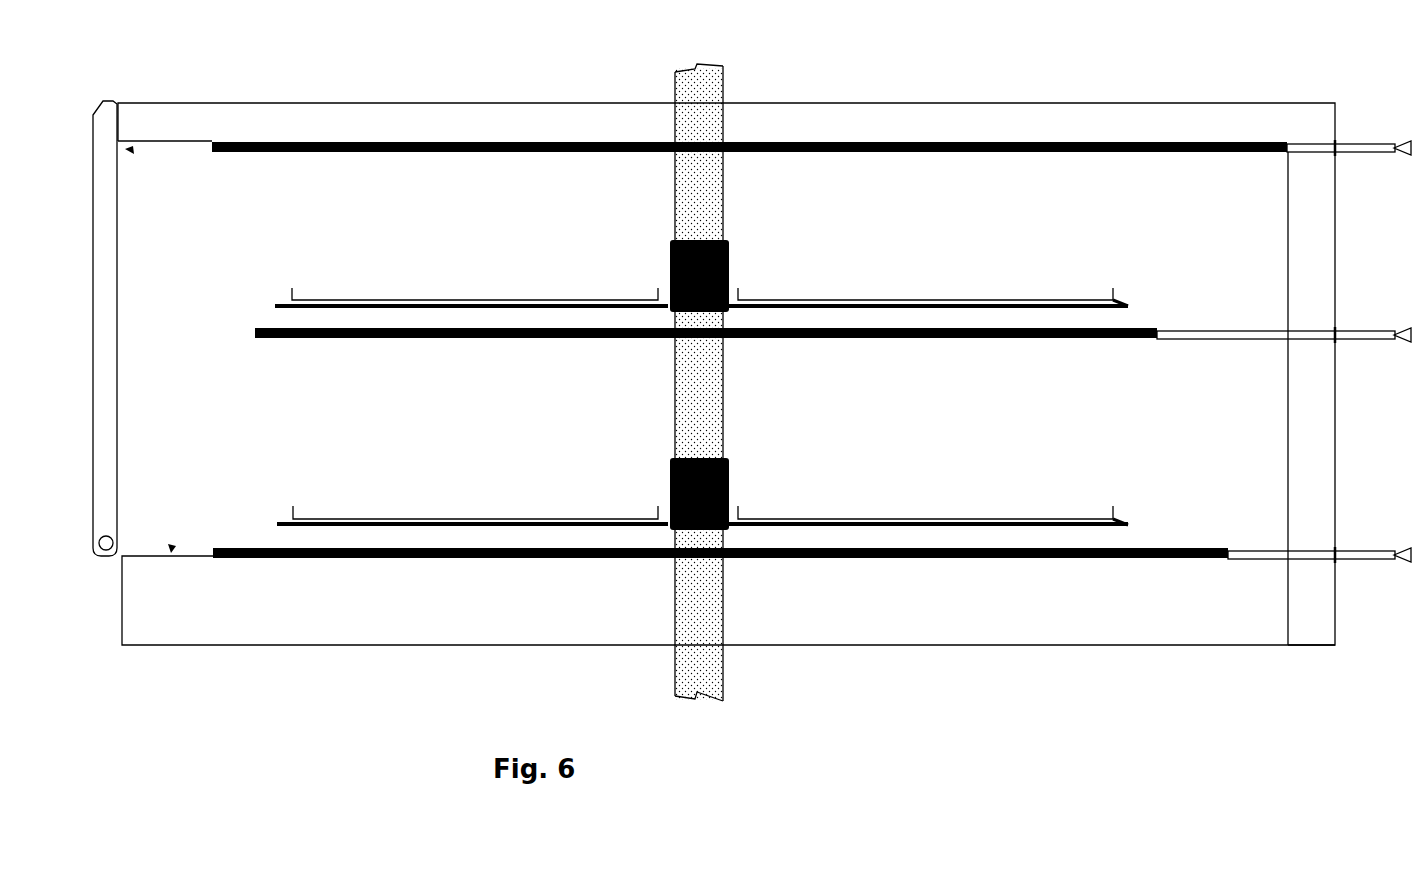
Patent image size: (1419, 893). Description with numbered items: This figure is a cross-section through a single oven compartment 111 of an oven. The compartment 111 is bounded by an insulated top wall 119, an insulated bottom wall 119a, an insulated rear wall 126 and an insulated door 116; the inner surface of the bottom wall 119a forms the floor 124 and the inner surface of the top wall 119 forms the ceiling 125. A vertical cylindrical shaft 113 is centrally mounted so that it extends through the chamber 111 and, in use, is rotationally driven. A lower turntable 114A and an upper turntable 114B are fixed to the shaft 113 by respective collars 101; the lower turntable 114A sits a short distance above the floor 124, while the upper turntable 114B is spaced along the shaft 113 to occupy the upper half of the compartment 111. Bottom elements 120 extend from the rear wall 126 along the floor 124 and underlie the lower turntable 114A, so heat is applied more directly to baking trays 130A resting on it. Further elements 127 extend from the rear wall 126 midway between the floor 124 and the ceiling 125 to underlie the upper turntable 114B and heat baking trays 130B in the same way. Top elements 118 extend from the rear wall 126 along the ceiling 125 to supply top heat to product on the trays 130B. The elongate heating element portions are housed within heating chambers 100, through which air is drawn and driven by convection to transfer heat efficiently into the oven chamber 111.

The heating chamber 100 is at (393, 265).
The collar 101 is at (727, 258).
The oven compartment 111 is at (268, 207).
The vertical cylindrical shaft 113 is at (725, 413).
The lower turntable 114A is at (1123, 525).
The upper turntable 114B is at (1125, 302).
The door 116 is at (103, 293).
The top element 118 is at (1245, 145).
The top wall 119 is at (995, 118).
The bottom wall 119a is at (1047, 605).
The bottom element 120 is at (437, 556).
The floor 124 is at (174, 548).
The ceiling 125 is at (130, 150).
The rear wall 126 is at (1312, 236).
The element 127 is at (278, 340).
The baking tray 130A is at (902, 520).
The baking tray 130B is at (903, 300).